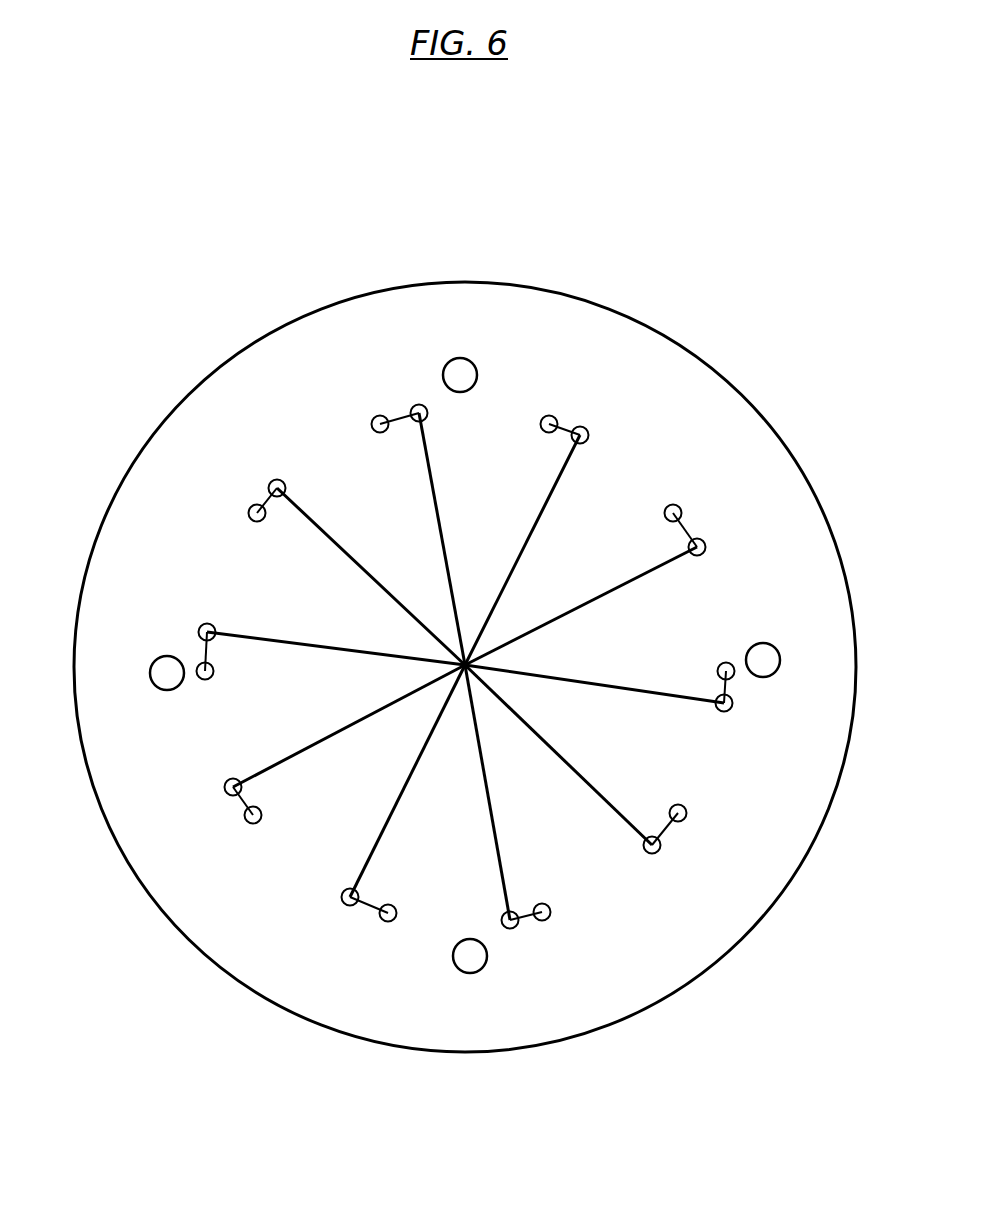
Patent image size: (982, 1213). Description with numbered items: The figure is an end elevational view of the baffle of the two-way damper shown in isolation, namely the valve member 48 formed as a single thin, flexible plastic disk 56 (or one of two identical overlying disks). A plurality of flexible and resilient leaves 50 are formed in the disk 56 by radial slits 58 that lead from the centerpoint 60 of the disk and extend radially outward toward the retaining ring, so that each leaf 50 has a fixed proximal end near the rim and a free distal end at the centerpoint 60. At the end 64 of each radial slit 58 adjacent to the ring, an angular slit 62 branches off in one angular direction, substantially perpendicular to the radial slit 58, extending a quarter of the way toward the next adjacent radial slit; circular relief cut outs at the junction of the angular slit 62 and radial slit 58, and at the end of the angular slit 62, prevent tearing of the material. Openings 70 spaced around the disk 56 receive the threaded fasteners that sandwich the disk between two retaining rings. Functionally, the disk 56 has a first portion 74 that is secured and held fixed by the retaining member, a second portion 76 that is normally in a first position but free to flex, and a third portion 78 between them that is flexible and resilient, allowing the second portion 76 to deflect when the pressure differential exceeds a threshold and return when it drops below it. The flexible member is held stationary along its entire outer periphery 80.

The valve member 48 is at (768, 457).
The leaves 50 is at (418, 528).
The disk 56 is at (232, 377).
The radial slit 58 is at (660, 567).
The centerpoint 60 is at (465, 665).
The angular slit 62 is at (567, 423).
The end of the radial slit 64 is at (585, 428).
The openings 70 is at (470, 357).
The first portion 74 is at (320, 463).
The second portion 76 is at (443, 603).
The third portion 78 is at (283, 360).
The outer periphery 80 is at (442, 667).